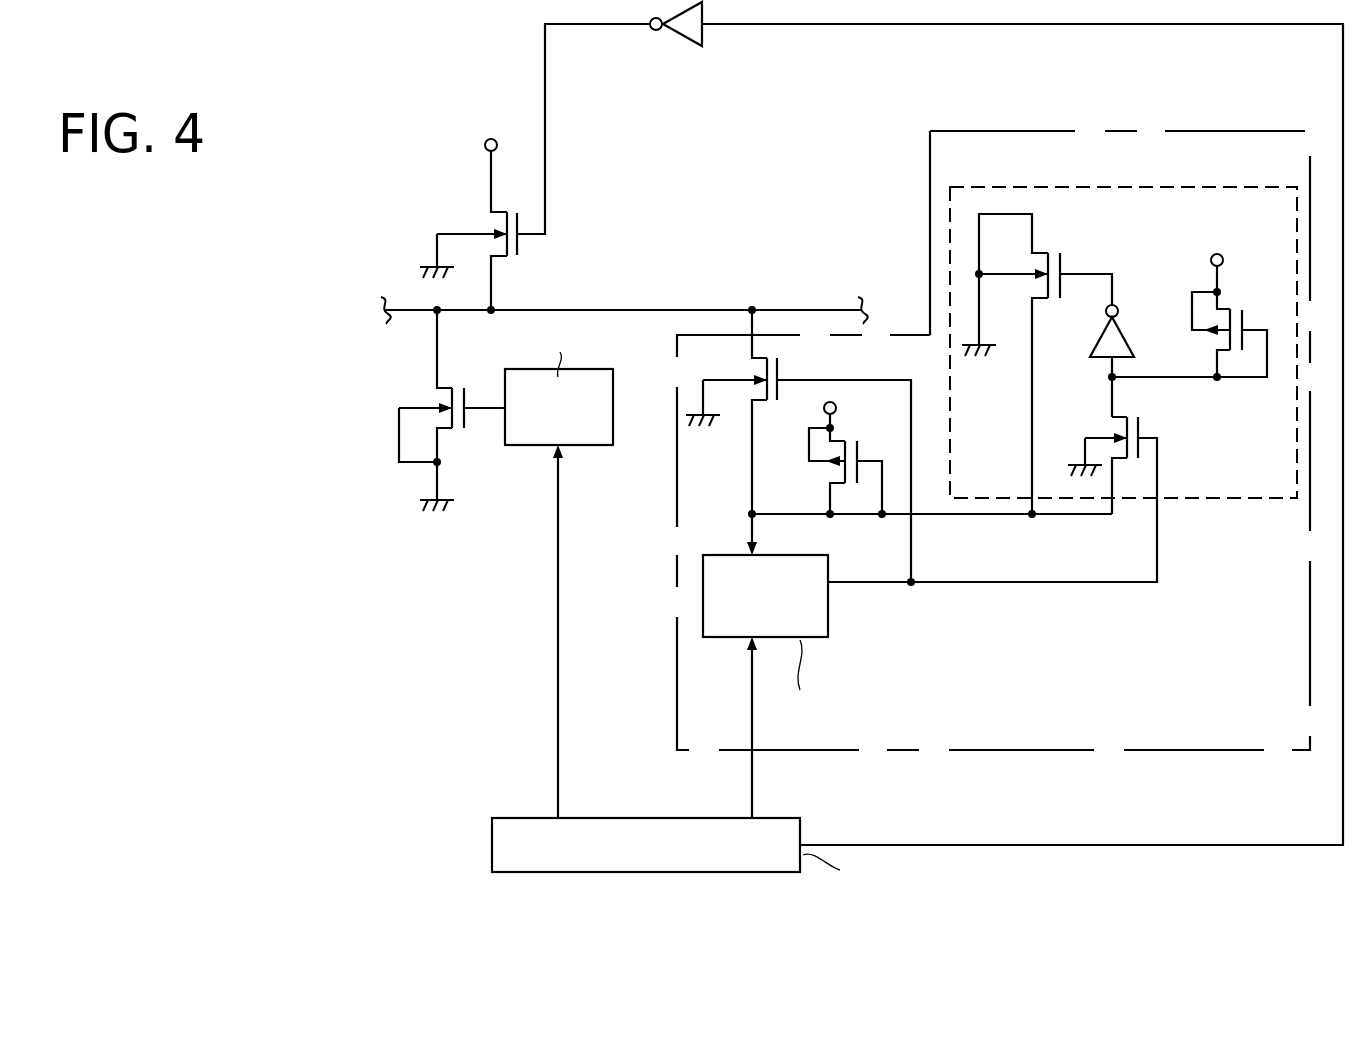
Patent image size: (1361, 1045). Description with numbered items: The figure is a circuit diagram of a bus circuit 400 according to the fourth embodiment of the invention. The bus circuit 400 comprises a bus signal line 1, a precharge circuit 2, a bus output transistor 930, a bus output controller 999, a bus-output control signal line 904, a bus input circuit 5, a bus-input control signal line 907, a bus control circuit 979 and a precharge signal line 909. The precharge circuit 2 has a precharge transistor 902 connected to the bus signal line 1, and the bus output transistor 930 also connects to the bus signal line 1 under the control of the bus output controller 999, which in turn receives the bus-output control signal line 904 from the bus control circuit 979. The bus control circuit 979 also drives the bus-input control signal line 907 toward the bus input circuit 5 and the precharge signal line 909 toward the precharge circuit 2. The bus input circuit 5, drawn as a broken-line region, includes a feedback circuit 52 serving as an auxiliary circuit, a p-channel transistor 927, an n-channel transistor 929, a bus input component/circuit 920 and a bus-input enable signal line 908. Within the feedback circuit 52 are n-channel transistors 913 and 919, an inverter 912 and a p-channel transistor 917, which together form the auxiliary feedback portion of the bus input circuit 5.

The bus circuit 400 is at (390, 151).
The bus signal line 1 is at (686, 310).
The precharge circuit 2 is at (566, 200).
The bus input circuit 5 is at (1035, 130).
The feedback circuit 52 is at (1135, 187).
The precharge transistor 902 is at (490, 222).
The bus output transistor 930 is at (440, 398).
The bus output controller 999 is at (600, 446).
The bus-output control signal line 904 is at (557, 612).
The bus control circuit 979 is at (529, 817).
The bus-input control signal line 907 is at (753, 780).
The precharge signal line 909 is at (876, 836).
The n-channel transistor 929 is at (776, 350).
The p-channel transistor 927 is at (851, 440).
The bus input component/circuit 920 is at (830, 564).
The bus-input enable signal line 908 is at (875, 585).
The n-channel transistor 913 is at (1053, 256).
The inverter 912 is at (1127, 332).
The p-channel transistor 917 is at (1233, 320).
The n-channel transistor 919 is at (1130, 417).